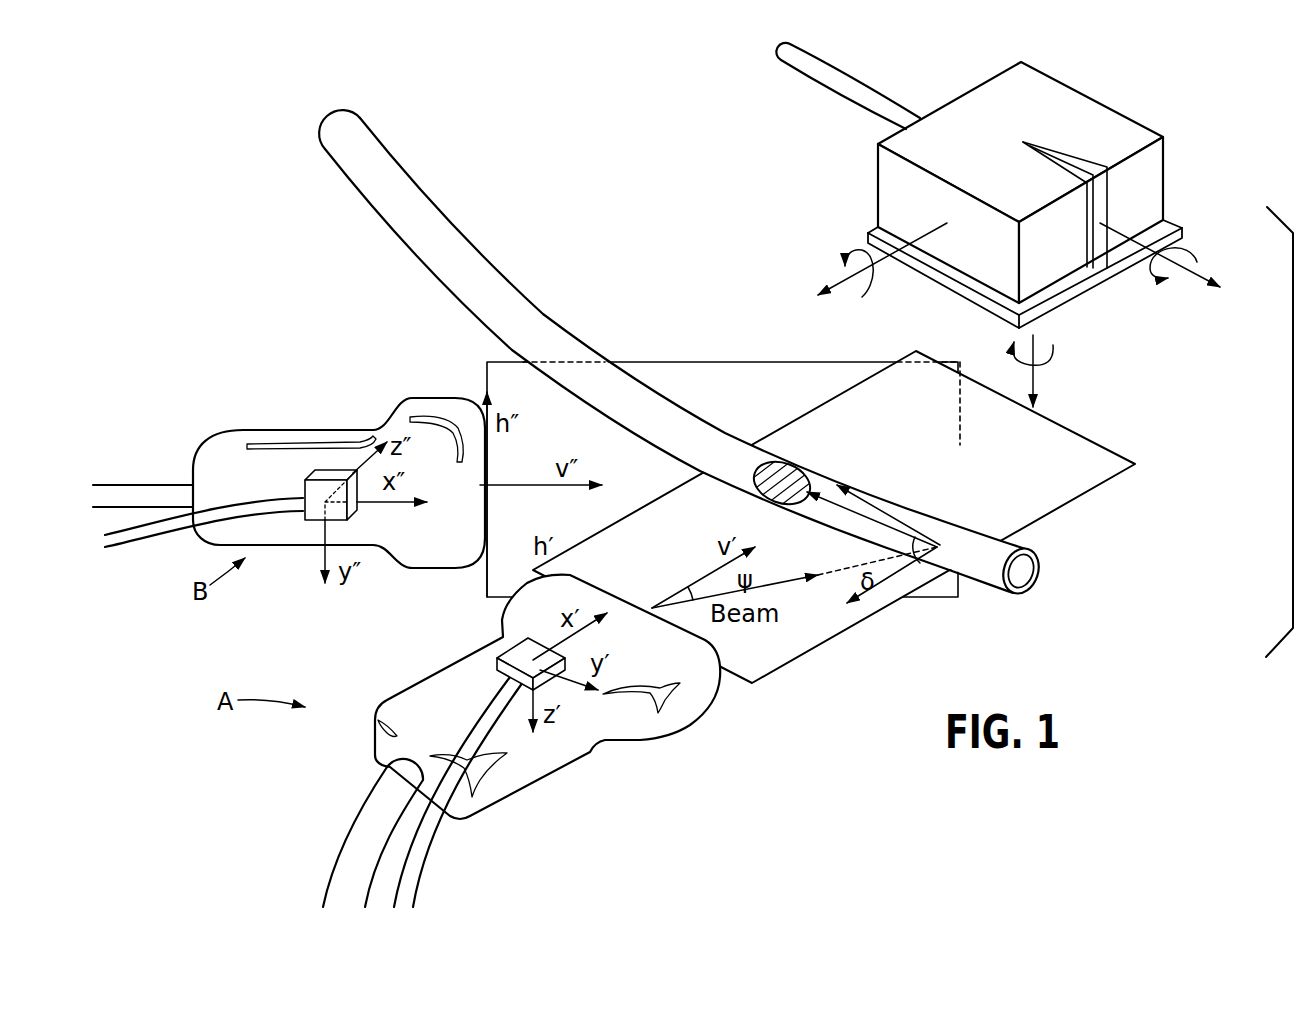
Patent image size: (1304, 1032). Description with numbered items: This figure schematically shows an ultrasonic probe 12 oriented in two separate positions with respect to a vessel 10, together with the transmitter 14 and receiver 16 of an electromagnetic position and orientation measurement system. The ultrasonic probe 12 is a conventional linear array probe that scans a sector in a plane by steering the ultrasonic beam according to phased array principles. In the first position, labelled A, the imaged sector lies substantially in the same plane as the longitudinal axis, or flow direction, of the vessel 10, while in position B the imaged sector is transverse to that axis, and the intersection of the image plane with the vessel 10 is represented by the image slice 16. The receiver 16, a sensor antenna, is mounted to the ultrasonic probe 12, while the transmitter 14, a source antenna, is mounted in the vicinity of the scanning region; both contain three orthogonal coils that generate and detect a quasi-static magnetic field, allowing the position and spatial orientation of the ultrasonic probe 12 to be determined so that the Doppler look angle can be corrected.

The vessel 10 is at (442, 222).
The ultrasonic probe 12 is at (263, 430).
The transmitter 14 is at (1107, 103).
The receiver 16 is at (313, 517).